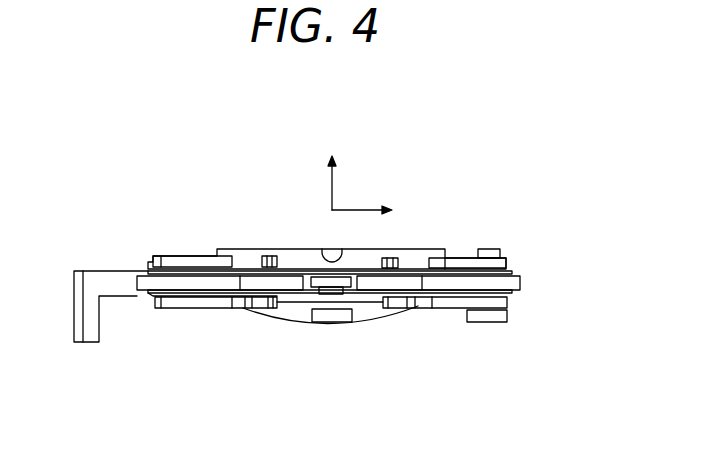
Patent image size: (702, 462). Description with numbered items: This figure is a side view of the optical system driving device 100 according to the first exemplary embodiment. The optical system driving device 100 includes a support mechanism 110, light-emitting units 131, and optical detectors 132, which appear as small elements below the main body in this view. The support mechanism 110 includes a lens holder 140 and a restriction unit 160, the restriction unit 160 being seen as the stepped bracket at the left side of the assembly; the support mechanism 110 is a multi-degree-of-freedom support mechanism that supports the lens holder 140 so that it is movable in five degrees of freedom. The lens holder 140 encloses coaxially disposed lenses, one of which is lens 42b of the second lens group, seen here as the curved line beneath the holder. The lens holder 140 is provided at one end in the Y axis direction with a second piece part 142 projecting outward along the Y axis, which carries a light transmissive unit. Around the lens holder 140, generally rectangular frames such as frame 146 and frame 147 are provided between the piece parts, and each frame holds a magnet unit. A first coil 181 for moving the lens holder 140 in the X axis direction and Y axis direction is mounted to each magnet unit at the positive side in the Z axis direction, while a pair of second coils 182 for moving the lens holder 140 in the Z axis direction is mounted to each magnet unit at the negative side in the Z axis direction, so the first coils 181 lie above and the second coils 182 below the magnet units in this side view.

The optical system driving device 100 is at (337, 100).
The support mechanism 110 is at (415, 206).
The light-emitting unit 131 is at (323, 248).
The optical detector 132 is at (325, 319).
The lens holder 140 is at (428, 250).
The second piece part 142 is at (316, 291).
The frame 146 is at (520, 282).
The frame 147 is at (141, 284).
The restriction unit 160 is at (92, 265).
The first coil 181 is at (173, 263).
The second coil 182 is at (187, 305).
The lens 42b is at (378, 316).